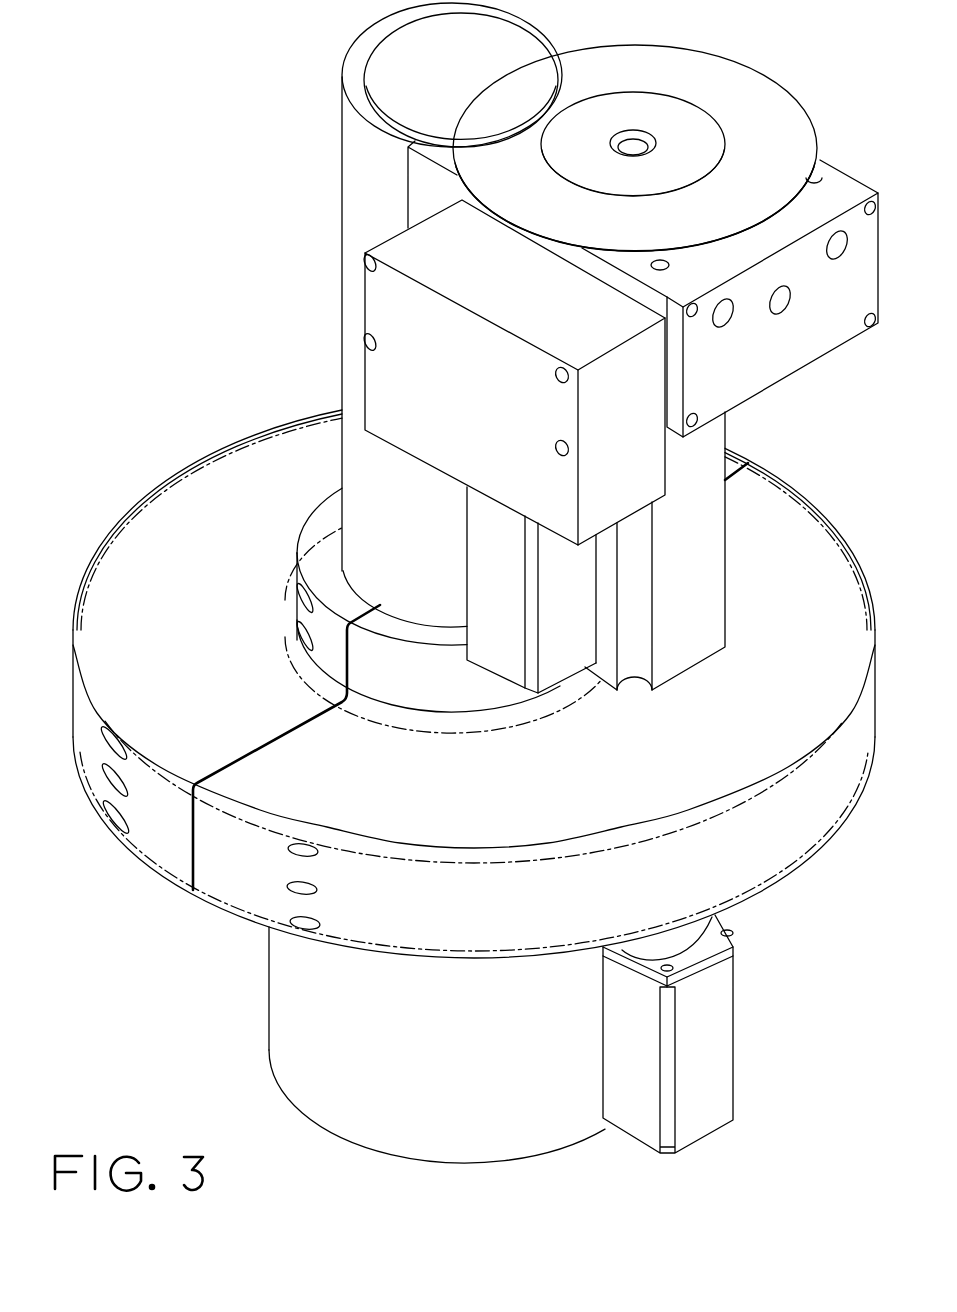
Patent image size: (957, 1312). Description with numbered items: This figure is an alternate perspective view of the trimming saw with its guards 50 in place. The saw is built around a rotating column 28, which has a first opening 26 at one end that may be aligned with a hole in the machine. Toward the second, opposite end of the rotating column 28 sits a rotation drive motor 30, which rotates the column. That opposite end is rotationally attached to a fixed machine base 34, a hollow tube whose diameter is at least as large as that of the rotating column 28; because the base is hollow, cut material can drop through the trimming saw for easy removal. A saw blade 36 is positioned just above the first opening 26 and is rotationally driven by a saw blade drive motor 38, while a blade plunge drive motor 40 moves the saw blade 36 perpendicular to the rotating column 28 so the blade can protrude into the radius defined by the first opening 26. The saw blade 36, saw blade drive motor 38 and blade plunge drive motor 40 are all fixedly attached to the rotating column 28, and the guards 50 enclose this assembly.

The first opening 26 is at (386, 58).
The rotating column 28 is at (355, 207).
The rotation drive motor 30 is at (718, 1060).
The fixed machine base 34 is at (295, 1017).
The saw blade 36 is at (748, 148).
The saw blade drive motor 38 is at (672, 595).
The blade plunge drive motor 40 is at (483, 598).
The guards 50 is at (608, 442).